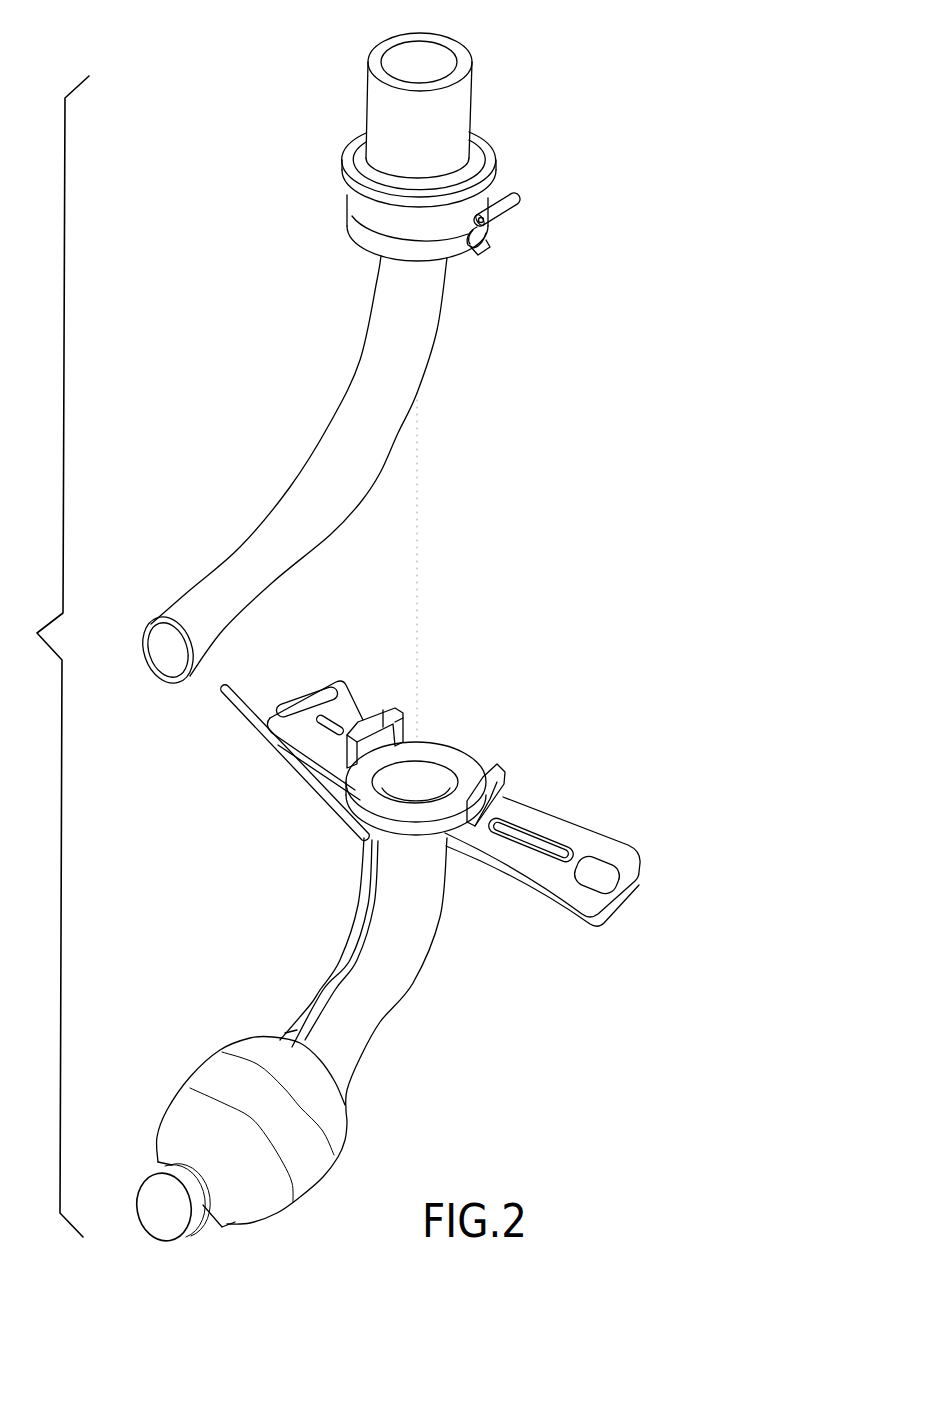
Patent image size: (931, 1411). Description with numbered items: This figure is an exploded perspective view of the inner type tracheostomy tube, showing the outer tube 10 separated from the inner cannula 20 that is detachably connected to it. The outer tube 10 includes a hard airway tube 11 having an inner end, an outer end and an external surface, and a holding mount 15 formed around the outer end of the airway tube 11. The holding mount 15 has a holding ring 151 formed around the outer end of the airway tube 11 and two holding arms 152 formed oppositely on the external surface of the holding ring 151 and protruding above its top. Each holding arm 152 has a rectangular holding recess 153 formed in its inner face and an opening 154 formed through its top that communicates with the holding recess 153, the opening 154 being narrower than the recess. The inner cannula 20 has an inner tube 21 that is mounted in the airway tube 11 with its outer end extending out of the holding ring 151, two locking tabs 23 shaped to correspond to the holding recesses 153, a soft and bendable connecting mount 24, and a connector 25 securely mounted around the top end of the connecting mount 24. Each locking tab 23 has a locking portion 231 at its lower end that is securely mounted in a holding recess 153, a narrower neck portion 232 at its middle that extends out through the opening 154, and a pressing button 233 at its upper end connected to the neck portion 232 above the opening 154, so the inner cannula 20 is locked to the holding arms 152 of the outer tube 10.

The outer tube 10 is at (385, 939).
The airway tube 11 is at (365, 1027).
The holding mount 15 is at (430, 779).
The holding ring 151 is at (365, 802).
The holding arm 152 is at (498, 797).
The holding recess 153 is at (398, 732).
The opening 154 is at (373, 718).
The inner cannula 20 is at (371, 354).
The inner tube 21 is at (307, 551).
The locking tab 23 is at (532, 224).
The locking portion 231 is at (479, 250).
The neck portion 232 is at (493, 237).
The pressing button 233 is at (512, 205).
The connecting mount 24 is at (367, 242).
The connector 25 is at (378, 107).